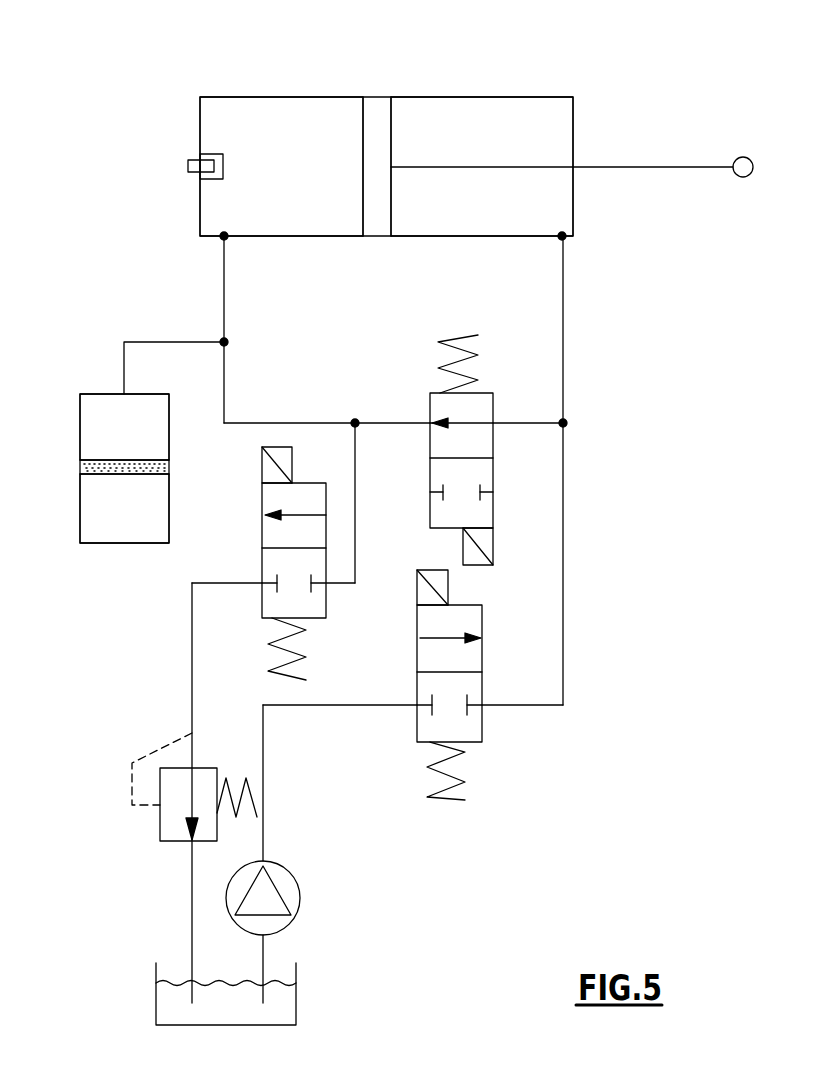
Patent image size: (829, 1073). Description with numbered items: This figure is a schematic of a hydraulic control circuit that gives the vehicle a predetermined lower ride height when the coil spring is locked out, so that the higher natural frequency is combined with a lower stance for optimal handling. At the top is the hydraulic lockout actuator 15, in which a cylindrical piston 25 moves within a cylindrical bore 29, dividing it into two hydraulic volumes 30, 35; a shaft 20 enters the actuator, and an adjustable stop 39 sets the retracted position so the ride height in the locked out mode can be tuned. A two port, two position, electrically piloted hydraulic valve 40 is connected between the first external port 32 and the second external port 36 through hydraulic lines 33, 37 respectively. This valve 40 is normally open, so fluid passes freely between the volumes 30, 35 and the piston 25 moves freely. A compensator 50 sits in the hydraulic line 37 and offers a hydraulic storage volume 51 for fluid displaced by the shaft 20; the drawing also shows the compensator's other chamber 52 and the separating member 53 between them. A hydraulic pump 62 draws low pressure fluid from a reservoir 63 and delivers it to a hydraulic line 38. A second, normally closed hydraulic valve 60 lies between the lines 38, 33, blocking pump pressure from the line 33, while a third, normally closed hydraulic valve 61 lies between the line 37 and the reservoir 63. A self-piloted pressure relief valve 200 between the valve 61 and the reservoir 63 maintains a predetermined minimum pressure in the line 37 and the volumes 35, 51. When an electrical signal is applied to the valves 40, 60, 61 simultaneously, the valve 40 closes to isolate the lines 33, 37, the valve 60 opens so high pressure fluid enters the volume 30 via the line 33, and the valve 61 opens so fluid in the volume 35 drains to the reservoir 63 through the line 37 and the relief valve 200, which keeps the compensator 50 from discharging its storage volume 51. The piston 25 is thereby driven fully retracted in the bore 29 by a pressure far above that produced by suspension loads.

The hydraulic lockout actuator 15 is at (341, 60).
The hydraulic volume 35 is at (268, 128).
The cylindrical piston 25 is at (378, 110).
The cylindrical bore 29 is at (490, 97).
The hydraulic volume 30 is at (507, 128).
The shaft 20 is at (619, 167).
The adjustable stop 39 is at (198, 173).
The second external port 36 is at (216, 245).
The first external port 32 is at (570, 246).
The hydraulic line 37 is at (240, 438).
The hydraulic line 33 is at (575, 386).
The hydraulic valve 40 is at (511, 467).
The compensator 50 is at (119, 479).
The hydraulic storage volume 51 is at (100, 422).
The separating piston 53 is at (86, 470).
The fluid chamber 52 is at (100, 516).
The hydraulic valve 61 is at (263, 636).
The hydraulic line 38 is at (326, 705).
The hydraulic valve 60 is at (492, 731).
The pressure relief valve 200 is at (167, 862).
The hydraulic pump 62 is at (300, 888).
The reservoir 63 is at (286, 1008).